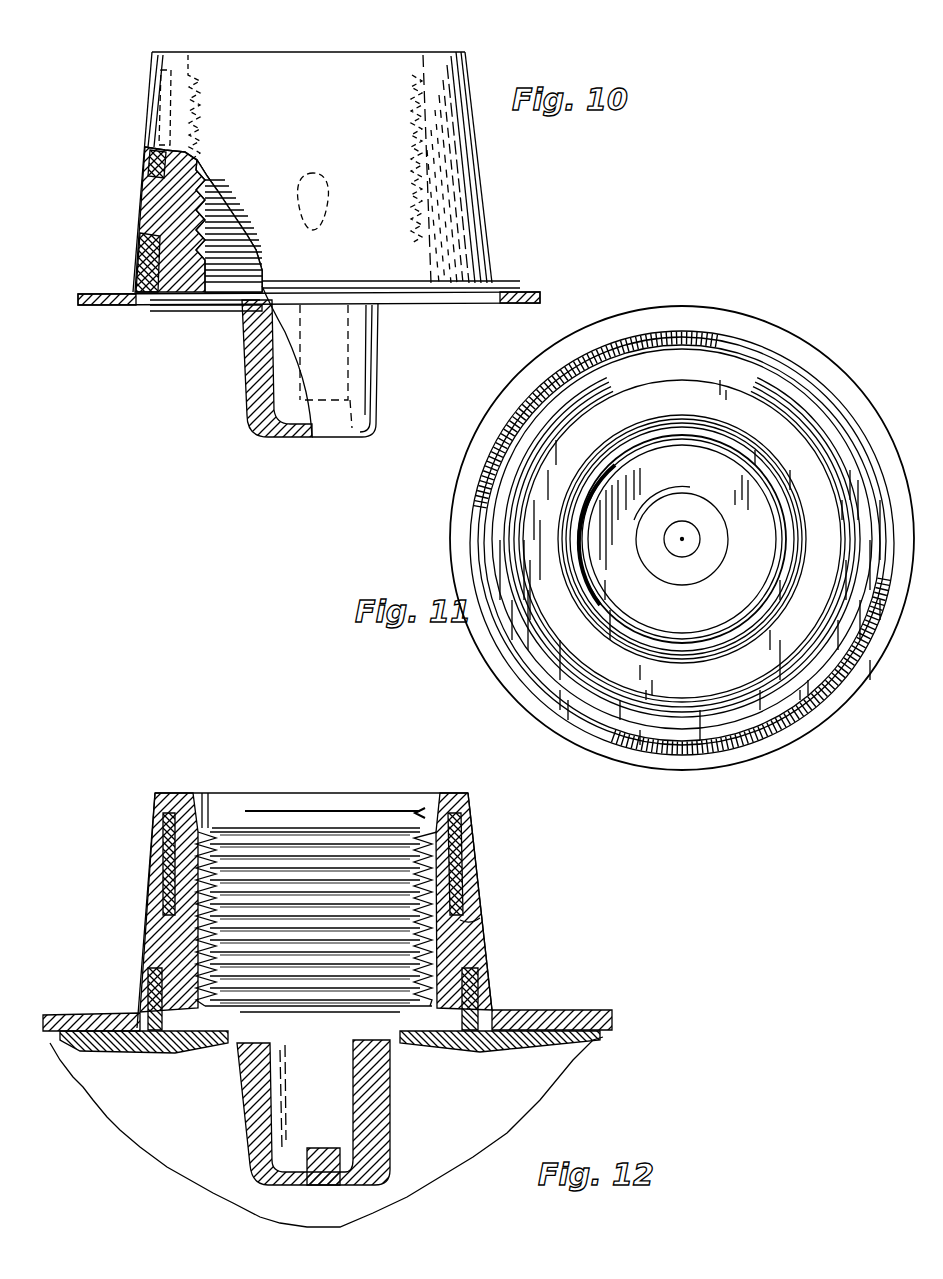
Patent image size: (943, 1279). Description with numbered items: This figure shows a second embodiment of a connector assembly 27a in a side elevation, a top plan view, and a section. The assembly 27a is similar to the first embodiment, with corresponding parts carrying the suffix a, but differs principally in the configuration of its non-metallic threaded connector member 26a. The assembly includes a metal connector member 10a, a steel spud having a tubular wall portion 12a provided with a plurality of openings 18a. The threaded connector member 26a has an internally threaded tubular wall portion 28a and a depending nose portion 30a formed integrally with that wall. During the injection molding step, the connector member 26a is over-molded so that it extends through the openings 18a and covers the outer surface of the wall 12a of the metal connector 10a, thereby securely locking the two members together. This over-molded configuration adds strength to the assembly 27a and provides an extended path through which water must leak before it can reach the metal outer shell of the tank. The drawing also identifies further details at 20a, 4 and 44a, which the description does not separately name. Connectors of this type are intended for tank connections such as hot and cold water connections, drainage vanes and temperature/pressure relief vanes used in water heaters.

In FIG. 10, the threaded connector member 26a is at (292, 48).
In FIG. 12, the threaded connector member 26a is at (316, 791).
In FIG. 10, the connector assembly 27a is at (498, 213).
In FIG. 11, the connector assembly 27a is at (446, 534).
In FIG. 12, the connector assembly 27a is at (498, 952).
In FIG. 10, the internally threaded tubular wall portion 28a is at (224, 212).
In FIG. 12, the internally threaded tubular wall portion 28a is at (225, 858).
In FIG. 10, the tubular wall portion 12a is at (148, 163).
In FIG. 12, the tubular wall portion 12a is at (471, 848).
In FIG. 10, the metal connector member 10a is at (142, 256).
In FIG. 10, the lower rib / seal 20a is at (178, 312).
In FIG. 12, the lower rib / seal 20a is at (466, 1032).
In FIG. 10, the depending nose portion 30a is at (376, 378).
In FIG. 11, the depending nose portion 30a is at (712, 471).
In FIG. 12, the openings 18a is at (470, 922).
In FIG. 12, the flange 4 is at (482, 1012).
In FIG. 12, the socket 44a is at (240, 1106).